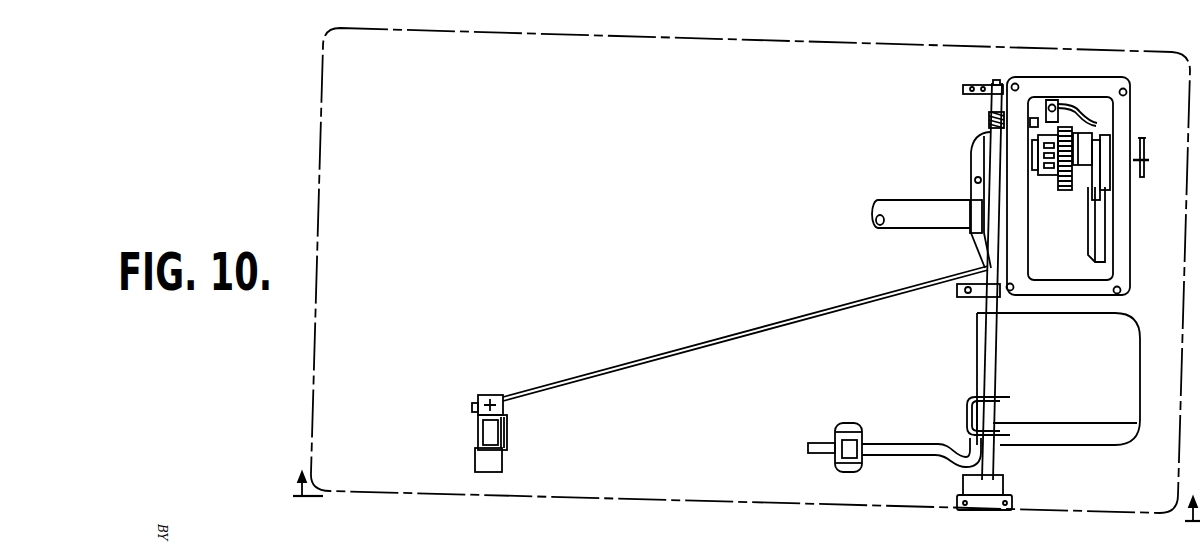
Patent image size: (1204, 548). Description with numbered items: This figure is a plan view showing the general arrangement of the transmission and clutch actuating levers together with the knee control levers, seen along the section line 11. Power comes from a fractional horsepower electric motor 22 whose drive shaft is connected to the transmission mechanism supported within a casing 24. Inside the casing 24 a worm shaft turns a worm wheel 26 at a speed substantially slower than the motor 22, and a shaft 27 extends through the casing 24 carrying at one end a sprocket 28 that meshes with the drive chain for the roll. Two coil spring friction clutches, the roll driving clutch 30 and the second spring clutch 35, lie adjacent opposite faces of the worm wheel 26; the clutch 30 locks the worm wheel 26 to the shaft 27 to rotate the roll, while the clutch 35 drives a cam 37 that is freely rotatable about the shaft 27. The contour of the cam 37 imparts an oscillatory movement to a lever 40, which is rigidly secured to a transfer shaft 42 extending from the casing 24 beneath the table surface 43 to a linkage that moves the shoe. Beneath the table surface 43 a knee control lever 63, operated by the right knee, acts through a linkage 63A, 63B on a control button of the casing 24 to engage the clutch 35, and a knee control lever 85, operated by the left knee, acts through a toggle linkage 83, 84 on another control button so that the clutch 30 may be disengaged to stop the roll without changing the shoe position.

The section line 11 is at (742, 509).
The electric motor 22 is at (1122, 345).
The casing 24 is at (1124, 228).
The worm wheel 26 is at (1065, 188).
The shaft 27 is at (1149, 160).
The sprocket 28 is at (1143, 140).
The roll driving clutch 30 is at (1047, 177).
The second spring clutch 35 is at (1083, 177).
The cam 37 is at (1105, 185).
The lever 40 is at (1108, 240).
The transfer shaft 42 is at (904, 200).
The table surface 43 is at (663, 458).
The knee control lever 63 is at (838, 427).
The linkage 63A is at (966, 416).
The linkage 63B is at (989, 118).
The toggle linkage 83 is at (990, 132).
The toggle linkage 84 is at (745, 330).
The knee control lever 85 is at (507, 421).